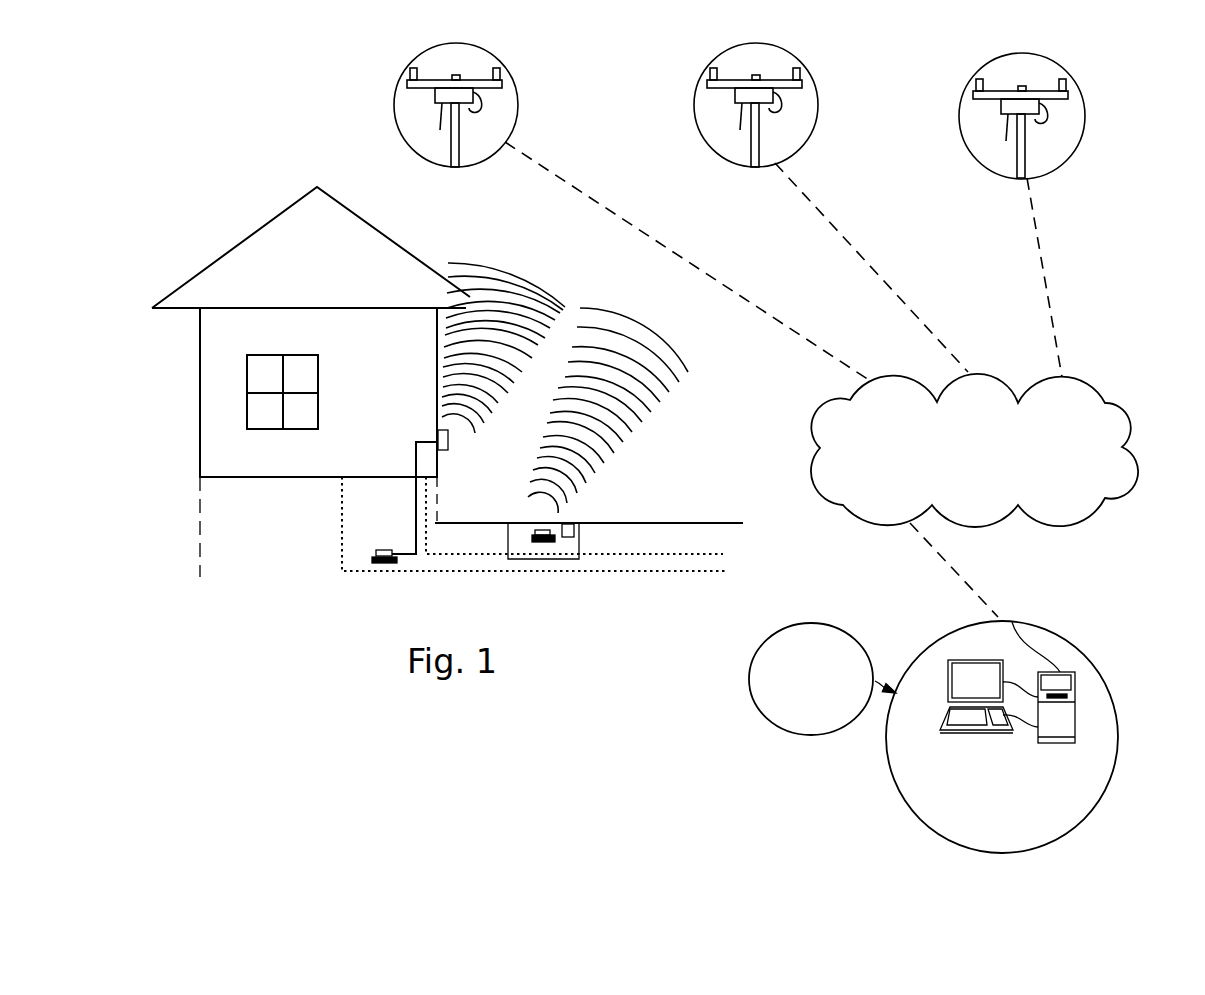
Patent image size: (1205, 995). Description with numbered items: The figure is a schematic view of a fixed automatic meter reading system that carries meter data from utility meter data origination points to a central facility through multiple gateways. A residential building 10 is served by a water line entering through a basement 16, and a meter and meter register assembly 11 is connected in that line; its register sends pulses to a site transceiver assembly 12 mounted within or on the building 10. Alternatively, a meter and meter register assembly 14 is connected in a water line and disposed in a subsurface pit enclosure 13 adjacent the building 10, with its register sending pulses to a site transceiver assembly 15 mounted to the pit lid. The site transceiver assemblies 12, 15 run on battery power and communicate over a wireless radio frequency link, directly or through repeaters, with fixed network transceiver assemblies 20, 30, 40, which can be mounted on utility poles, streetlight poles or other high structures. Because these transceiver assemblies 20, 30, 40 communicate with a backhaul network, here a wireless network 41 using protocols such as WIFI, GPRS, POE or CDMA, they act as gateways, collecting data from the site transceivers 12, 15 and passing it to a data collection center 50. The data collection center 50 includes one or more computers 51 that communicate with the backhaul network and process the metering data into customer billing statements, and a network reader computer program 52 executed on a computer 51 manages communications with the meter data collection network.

The residential building 10 is at (191, 423).
The meter and meter register assembly 11 is at (385, 565).
The site transceiver assembly 12 is at (448, 450).
The subsurface pit enclosure 13 is at (580, 540).
The meter and meter register assembly 14 is at (543, 542).
The site transceiver assembly 15 is at (577, 523).
The basement 16 is at (236, 527).
The network transceiver assembly (gateway) 20 is at (534, 86).
The network transceiver assembly (gateway) 30 is at (838, 88).
The network transceiver assembly (gateway) 40 is at (1103, 105).
The wireless network 41 is at (974, 450).
The data collection center 50 is at (1085, 653).
The computer 51 is at (927, 747).
The network reader computer program 52 is at (773, 727).